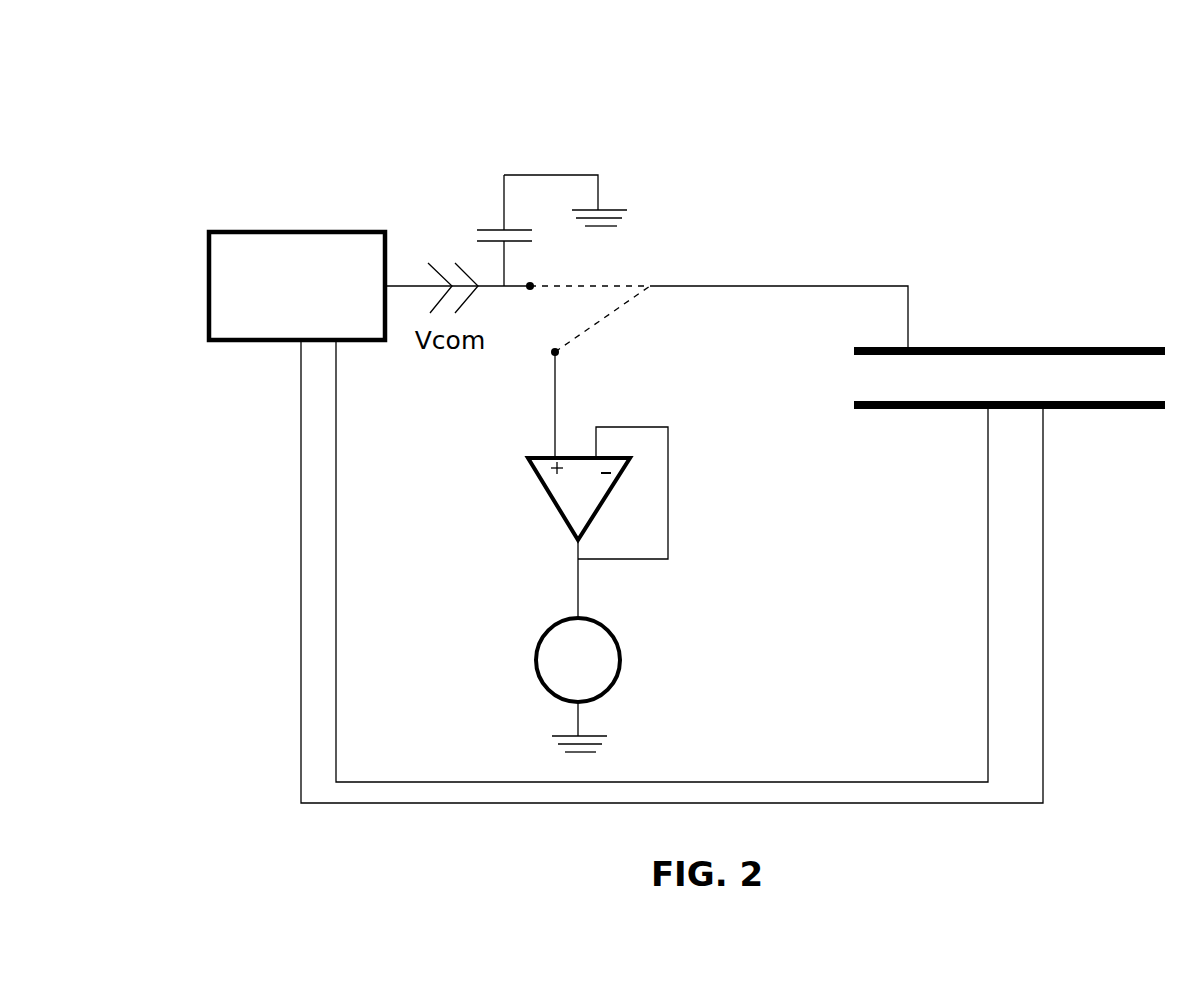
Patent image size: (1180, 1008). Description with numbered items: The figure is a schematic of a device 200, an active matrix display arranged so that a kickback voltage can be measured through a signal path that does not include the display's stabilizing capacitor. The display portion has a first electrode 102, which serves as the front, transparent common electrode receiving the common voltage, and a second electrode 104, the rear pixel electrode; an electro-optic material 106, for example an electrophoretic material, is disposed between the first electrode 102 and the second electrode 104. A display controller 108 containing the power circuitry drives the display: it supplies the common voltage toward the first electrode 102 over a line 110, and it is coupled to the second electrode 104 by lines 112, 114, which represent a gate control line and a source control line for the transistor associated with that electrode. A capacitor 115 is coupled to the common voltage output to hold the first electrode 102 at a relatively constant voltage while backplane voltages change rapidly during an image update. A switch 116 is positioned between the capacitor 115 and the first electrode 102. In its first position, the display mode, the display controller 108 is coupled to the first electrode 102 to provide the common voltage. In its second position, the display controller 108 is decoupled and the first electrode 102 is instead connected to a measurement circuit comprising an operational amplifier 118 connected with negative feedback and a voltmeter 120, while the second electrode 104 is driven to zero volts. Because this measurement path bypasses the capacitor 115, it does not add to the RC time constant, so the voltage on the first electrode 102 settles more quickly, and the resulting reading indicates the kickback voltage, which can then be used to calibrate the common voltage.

The device 200 is at (325, 126).
The display controller 108 is at (297, 286).
The capacitor 115 is at (470, 230).
The switch 116 is at (622, 277).
The line 110 is at (779, 302).
The first electrode 102 is at (1082, 347).
The second electrode 104 is at (1085, 409).
The electro-optic material 106 is at (937, 377).
The line 112 is at (646, 572).
The line 114 is at (662, 562).
The operational amplifier 118 is at (575, 485).
The voltmeter 120 is at (607, 685).